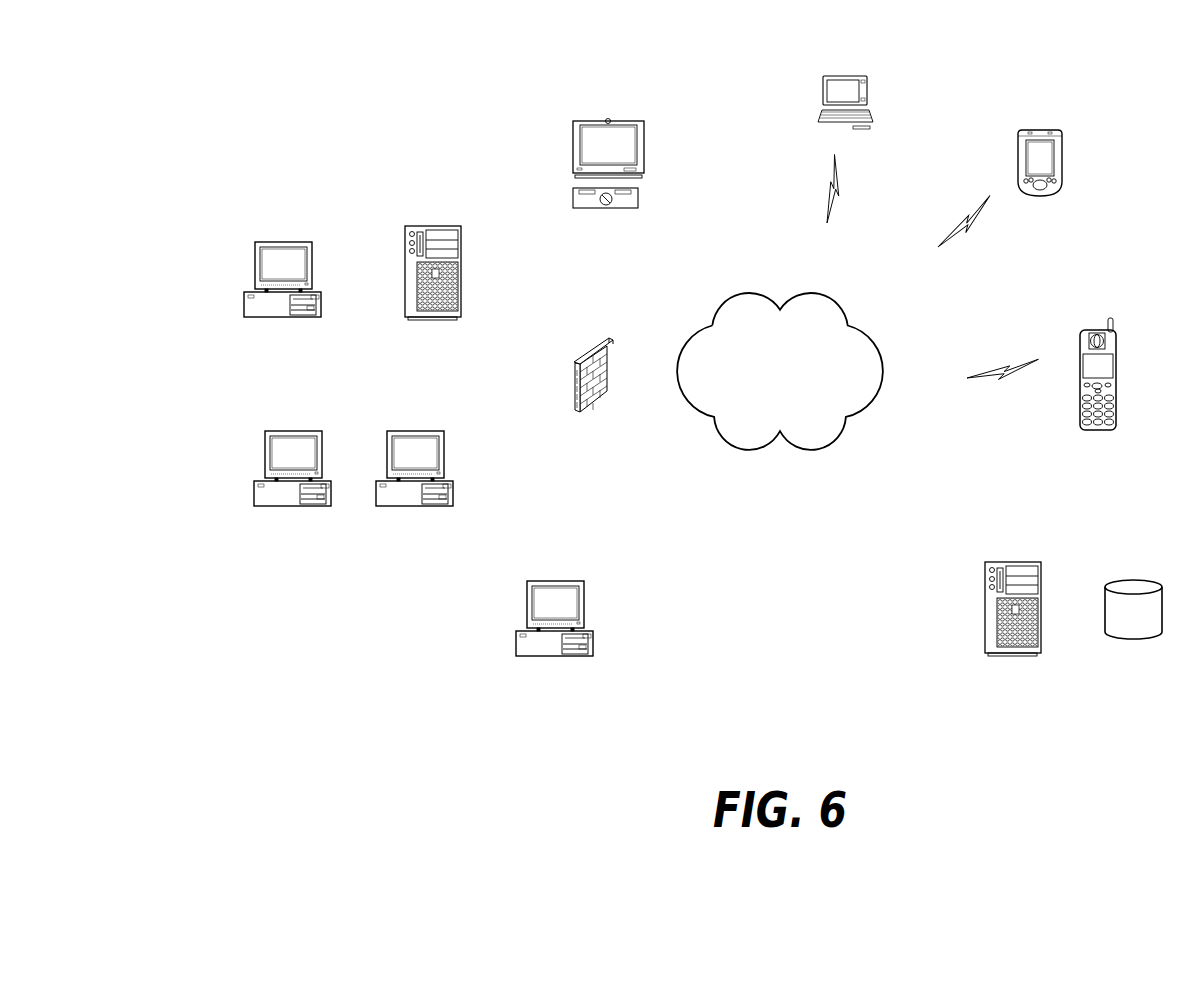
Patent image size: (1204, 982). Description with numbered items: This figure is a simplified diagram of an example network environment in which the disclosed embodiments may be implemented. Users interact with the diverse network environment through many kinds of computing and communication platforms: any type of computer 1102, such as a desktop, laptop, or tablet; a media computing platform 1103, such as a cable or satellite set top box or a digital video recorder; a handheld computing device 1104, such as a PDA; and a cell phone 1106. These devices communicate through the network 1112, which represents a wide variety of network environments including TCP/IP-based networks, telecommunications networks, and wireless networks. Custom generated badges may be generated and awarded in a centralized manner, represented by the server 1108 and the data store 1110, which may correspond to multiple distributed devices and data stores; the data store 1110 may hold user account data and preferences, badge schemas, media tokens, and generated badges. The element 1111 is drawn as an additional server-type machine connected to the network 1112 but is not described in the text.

The computer 1102 is at (822, 76).
The media computing platform 1103 is at (573, 196).
The handheld computing device 1104 is at (1020, 131).
The cell phone 1106 is at (1083, 334).
The server 1108 is at (990, 562).
The data store 1110 is at (1134, 580).
The server 1111 is at (435, 233).
The network 1112 is at (717, 311).